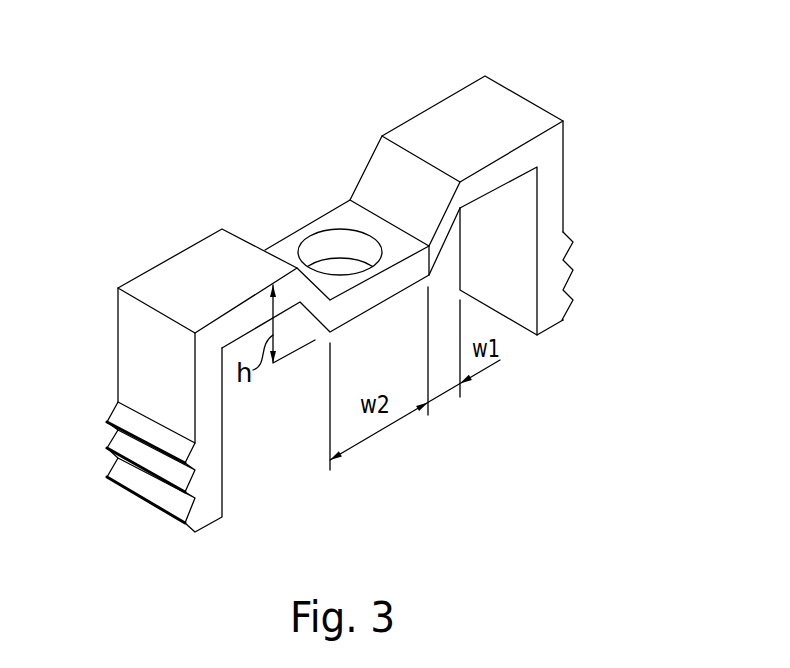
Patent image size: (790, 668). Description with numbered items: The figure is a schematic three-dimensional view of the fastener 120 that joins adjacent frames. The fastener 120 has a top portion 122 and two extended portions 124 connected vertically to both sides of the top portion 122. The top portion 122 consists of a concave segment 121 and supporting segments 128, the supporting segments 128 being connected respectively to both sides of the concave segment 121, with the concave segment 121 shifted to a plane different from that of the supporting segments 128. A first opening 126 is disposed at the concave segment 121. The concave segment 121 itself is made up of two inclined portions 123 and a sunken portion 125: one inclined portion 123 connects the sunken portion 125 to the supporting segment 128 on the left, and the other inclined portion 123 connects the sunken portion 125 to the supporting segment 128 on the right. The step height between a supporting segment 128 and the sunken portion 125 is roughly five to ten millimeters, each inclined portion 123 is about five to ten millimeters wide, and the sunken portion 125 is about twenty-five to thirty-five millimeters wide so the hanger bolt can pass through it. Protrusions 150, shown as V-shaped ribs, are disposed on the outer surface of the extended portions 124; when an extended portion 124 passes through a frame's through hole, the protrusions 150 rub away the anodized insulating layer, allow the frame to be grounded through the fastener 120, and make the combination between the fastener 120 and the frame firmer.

The fastener 120 is at (375, 270).
The concave segment 121 is at (262, 184).
The top portion 122 is at (314, 154).
The inclined portion 123 is at (380, 185).
The extended portion 124 is at (573, 228).
The sunken portion 125 is at (247, 215).
The first opening 126 is at (335, 262).
The supporting segment 128 is at (405, 130).
The protrusion 150 is at (575, 243).